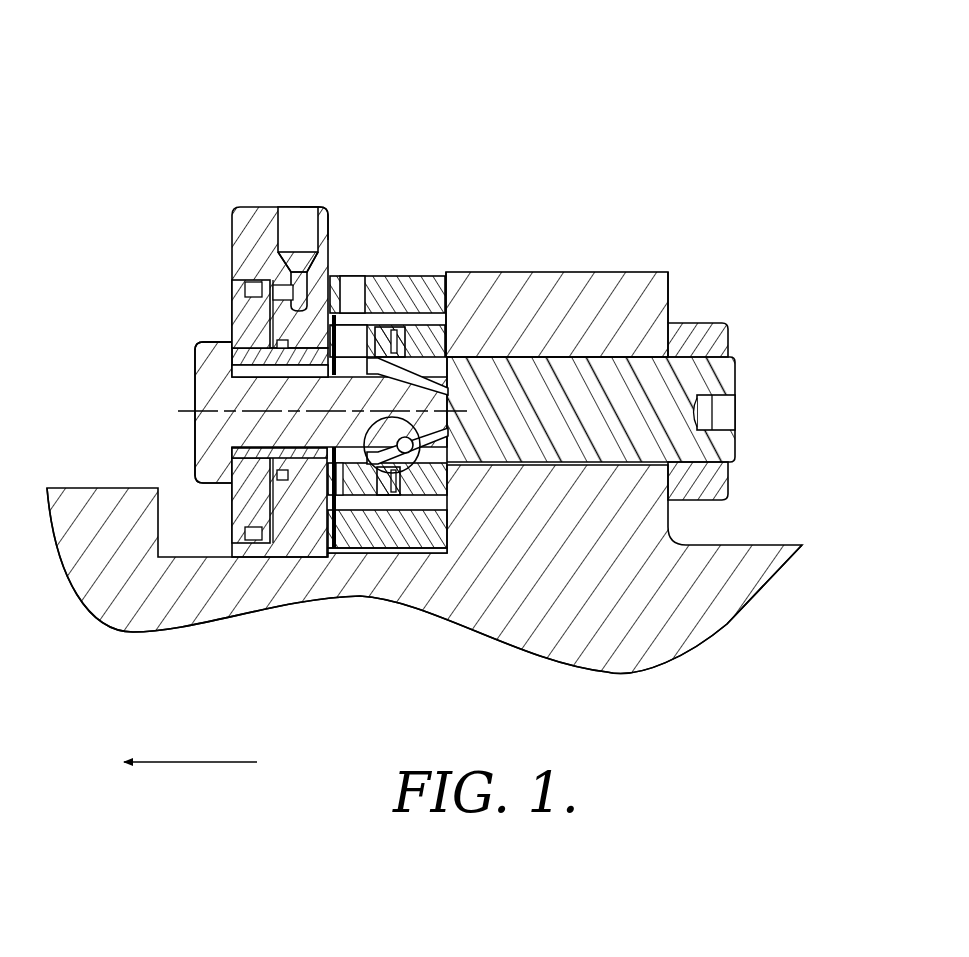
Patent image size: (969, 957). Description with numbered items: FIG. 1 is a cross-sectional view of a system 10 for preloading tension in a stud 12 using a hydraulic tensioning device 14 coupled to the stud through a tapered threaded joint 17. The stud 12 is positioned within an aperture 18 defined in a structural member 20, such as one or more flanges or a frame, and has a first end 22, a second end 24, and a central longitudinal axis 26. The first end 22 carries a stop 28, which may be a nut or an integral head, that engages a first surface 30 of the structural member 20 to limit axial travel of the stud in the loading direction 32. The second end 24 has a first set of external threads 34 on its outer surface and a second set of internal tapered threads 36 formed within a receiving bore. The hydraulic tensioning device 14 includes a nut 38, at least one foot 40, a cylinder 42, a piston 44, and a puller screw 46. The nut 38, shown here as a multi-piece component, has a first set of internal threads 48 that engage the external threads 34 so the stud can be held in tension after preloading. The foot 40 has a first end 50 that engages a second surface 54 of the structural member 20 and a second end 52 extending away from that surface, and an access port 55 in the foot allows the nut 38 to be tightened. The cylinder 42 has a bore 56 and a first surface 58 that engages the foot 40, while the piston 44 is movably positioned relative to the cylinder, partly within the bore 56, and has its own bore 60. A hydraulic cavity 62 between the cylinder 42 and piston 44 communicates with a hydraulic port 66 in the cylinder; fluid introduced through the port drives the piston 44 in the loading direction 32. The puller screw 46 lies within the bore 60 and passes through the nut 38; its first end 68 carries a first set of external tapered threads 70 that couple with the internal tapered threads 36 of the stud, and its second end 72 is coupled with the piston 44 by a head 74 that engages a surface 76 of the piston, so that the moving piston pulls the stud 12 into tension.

The system for preloading tension in a stud 10 is at (62, 56).
The stud 12 is at (742, 375).
The hydraulic tensioning device 14 is at (260, 262).
The tapered threaded joint 17 is at (390, 420).
The aperture 18 is at (530, 360).
The structural member 20 is at (646, 268).
The first end 22 is at (730, 358).
The second end 24 is at (440, 376).
The central longitudinal axis 26 is at (178, 411).
The stop 28 is at (736, 478).
The first surface 30 is at (673, 290).
The loading direction 32 is at (203, 764).
The first set of external threads 34 is at (446, 468).
The second set of internal tapered threads 36 is at (633, 667).
The nut 38 is at (398, 472).
The foot 40 is at (425, 548).
The cylinder 42 is at (250, 550).
The piston 44 is at (240, 309).
The puller screw 46 is at (187, 337).
The first set of internal threads 48 is at (337, 470).
The first end 50 is at (452, 300).
The second end 52 is at (308, 265).
The second surface 54 is at (397, 256).
The access port 55 is at (362, 274).
The bore 56 is at (232, 498).
The first surface 58 is at (330, 222).
The bore 60 is at (248, 378).
The hydraulic cavity 62 is at (261, 285).
The hydraulic port 66 is at (304, 212).
The first end 68 is at (458, 384).
The first set of external tapered threads 70 is at (405, 345).
The second end 72 is at (208, 432).
The head 74 is at (195, 383).
The surface 76 is at (233, 473).